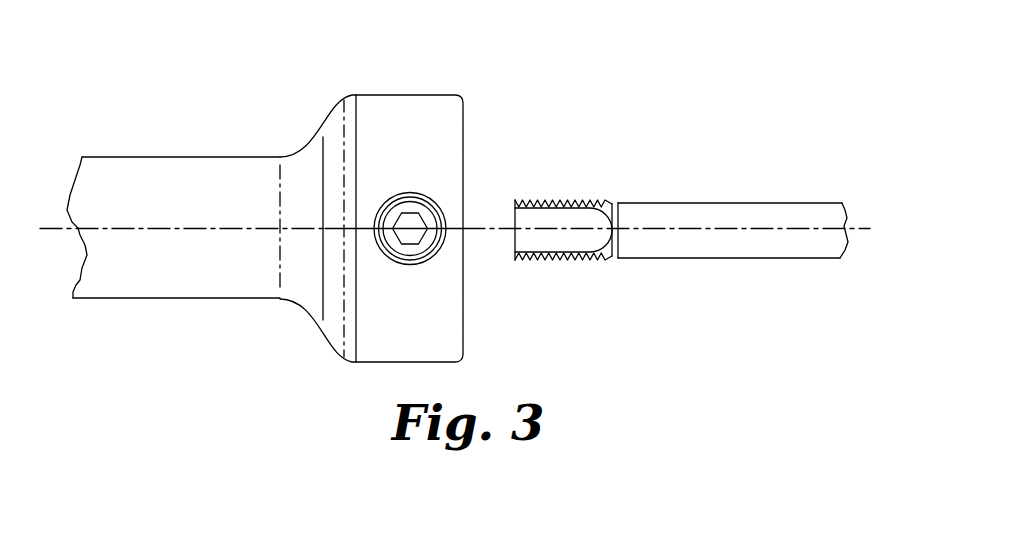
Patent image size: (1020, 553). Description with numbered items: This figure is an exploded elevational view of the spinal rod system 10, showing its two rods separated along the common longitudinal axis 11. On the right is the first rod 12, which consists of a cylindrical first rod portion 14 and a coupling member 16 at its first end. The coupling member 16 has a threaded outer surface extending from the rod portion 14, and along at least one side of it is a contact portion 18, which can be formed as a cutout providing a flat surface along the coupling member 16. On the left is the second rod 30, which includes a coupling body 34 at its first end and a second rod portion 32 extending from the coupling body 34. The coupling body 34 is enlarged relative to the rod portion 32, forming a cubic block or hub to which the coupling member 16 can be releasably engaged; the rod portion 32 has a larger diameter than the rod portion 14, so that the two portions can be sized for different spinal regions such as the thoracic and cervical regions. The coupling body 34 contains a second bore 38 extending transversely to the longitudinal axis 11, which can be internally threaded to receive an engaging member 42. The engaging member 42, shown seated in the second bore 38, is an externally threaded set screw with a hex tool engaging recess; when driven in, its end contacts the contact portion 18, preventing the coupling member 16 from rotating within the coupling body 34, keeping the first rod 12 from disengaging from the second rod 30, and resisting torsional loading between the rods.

The spinal rod system 10 is at (571, 97).
The longitudinal axis 11 is at (664, 215).
The first rod 12 is at (750, 186).
The first rod portion 14 is at (730, 230).
The coupling member 16 is at (582, 200).
The contact portion 18 is at (533, 213).
The second rod 30 is at (189, 163).
The second rod portion 32 is at (177, 268).
The coupling body 34 is at (377, 350).
The second bore 38 is at (415, 266).
The engaging member 42 is at (405, 204).